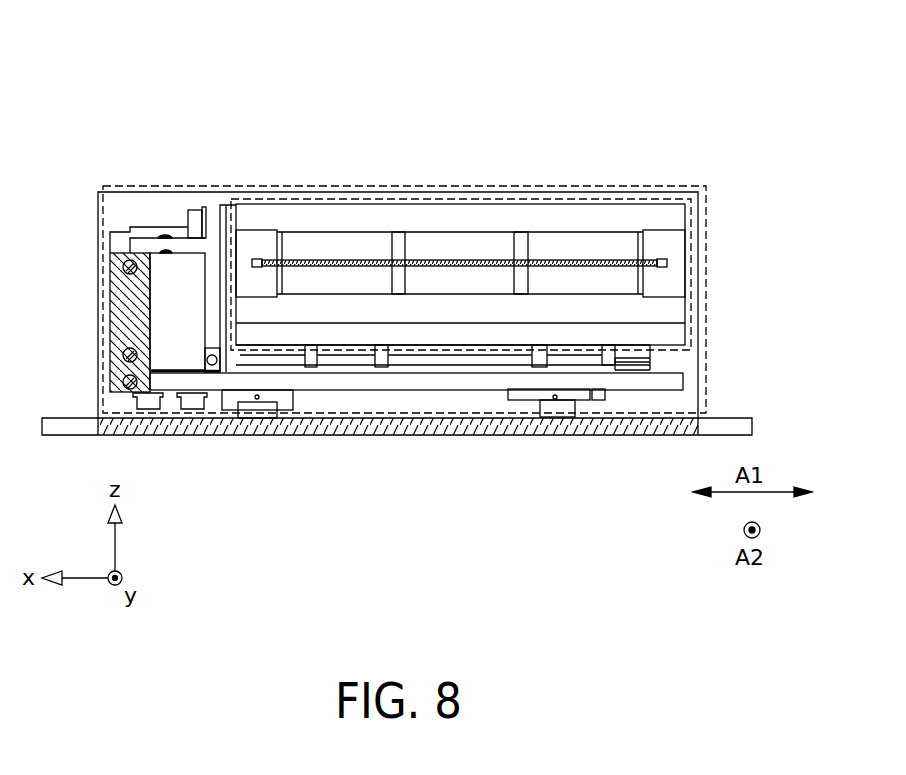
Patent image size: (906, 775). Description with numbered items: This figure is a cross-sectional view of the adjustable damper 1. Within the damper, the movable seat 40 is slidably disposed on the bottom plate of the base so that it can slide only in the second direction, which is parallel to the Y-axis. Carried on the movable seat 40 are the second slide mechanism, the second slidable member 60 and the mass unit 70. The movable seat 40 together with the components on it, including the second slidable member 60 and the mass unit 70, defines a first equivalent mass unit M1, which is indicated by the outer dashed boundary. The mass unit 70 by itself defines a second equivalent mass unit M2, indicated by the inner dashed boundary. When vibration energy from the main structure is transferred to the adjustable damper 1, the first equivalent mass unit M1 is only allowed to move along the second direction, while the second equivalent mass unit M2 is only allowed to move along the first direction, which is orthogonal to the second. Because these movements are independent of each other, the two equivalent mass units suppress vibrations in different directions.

The adjustable damper 1 is at (152, 44).
The movable seat 40 is at (216, 383).
The second slidable member 60 is at (123, 238).
The mass unit 70 is at (668, 333).
The first equivalent mass unit M1 is at (706, 223).
The second equivalent mass unit M2 is at (690, 269).